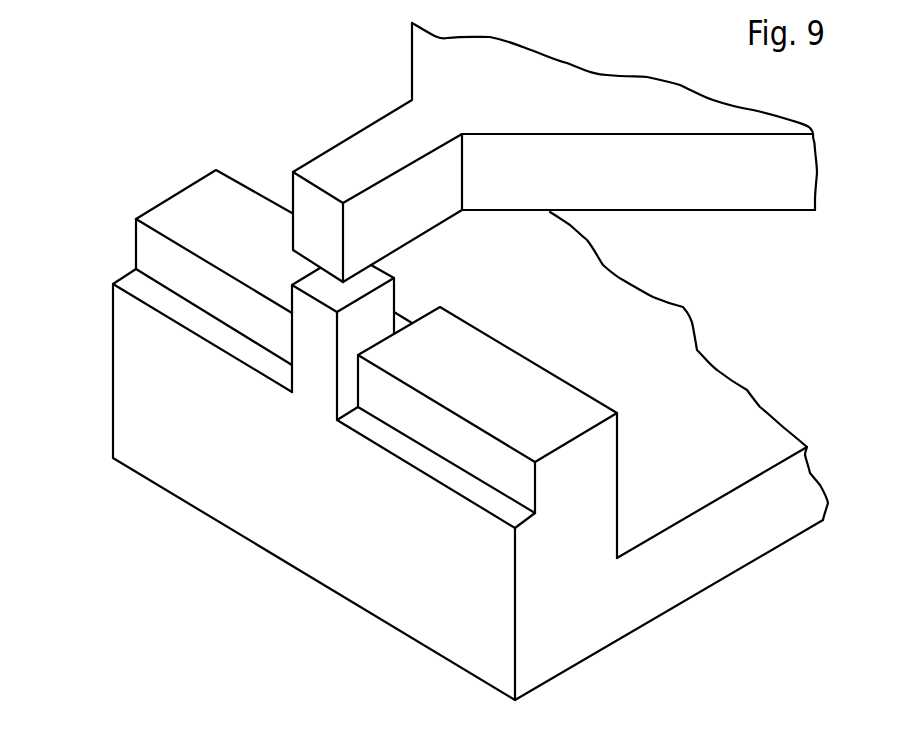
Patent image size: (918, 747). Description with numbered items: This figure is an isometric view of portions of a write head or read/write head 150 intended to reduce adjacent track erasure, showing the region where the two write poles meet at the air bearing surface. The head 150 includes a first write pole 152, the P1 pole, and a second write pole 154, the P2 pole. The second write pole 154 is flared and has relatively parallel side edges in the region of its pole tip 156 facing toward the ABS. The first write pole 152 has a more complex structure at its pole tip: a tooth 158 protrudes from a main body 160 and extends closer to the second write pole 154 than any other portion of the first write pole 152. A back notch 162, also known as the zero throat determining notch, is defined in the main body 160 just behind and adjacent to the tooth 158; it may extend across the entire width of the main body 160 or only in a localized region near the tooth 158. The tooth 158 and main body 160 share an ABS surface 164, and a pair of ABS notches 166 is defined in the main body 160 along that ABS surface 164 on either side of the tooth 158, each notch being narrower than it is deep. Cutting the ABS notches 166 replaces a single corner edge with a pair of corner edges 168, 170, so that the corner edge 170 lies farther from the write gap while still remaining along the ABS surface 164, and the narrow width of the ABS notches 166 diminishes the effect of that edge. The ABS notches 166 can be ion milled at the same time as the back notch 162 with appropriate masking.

The head 150 is at (337, 100).
The first write pole 152 is at (192, 183).
The second write pole 154 is at (402, 55).
The pole tip 156 is at (302, 193).
The tooth 158 is at (322, 370).
The main body 160 is at (600, 575).
The back notch 162 is at (413, 310).
The ABS surface 164 is at (432, 615).
The ABS notches 166 is at (243, 340).
The corner edge 168 is at (193, 253).
The corner edge 170 is at (170, 318).